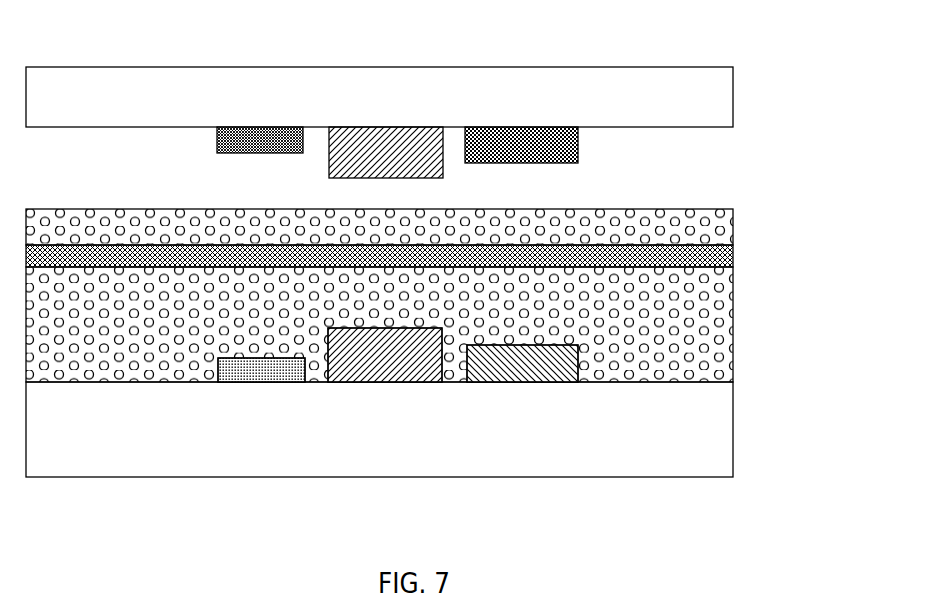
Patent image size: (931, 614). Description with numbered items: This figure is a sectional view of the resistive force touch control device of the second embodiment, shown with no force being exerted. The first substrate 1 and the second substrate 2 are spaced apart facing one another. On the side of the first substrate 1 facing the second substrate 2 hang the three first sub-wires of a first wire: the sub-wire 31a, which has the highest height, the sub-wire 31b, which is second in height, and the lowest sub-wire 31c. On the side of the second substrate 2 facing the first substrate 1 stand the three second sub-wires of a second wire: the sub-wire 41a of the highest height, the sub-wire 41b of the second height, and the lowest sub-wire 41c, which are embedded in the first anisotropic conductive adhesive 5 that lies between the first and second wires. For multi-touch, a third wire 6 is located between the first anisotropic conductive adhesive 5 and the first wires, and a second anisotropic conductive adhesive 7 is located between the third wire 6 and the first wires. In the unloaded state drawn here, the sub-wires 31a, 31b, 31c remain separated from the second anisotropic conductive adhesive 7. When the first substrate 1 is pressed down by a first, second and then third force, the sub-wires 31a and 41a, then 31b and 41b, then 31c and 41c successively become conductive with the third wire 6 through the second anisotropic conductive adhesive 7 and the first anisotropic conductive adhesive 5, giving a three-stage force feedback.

The first substrate 1 is at (650, 108).
The second substrate 2 is at (655, 430).
The first anisotropic conductive adhesive 5 is at (685, 320).
The third wire 6 is at (733, 250).
The second anisotropic conductive adhesive 7 is at (703, 228).
The sub-wire 31a is at (402, 143).
The sub-wire 31b is at (541, 128).
The sub-wire 31c is at (272, 127).
The sub-wire 41a is at (383, 365).
The sub-wire 41b is at (518, 367).
The sub-wire 41c is at (253, 367).